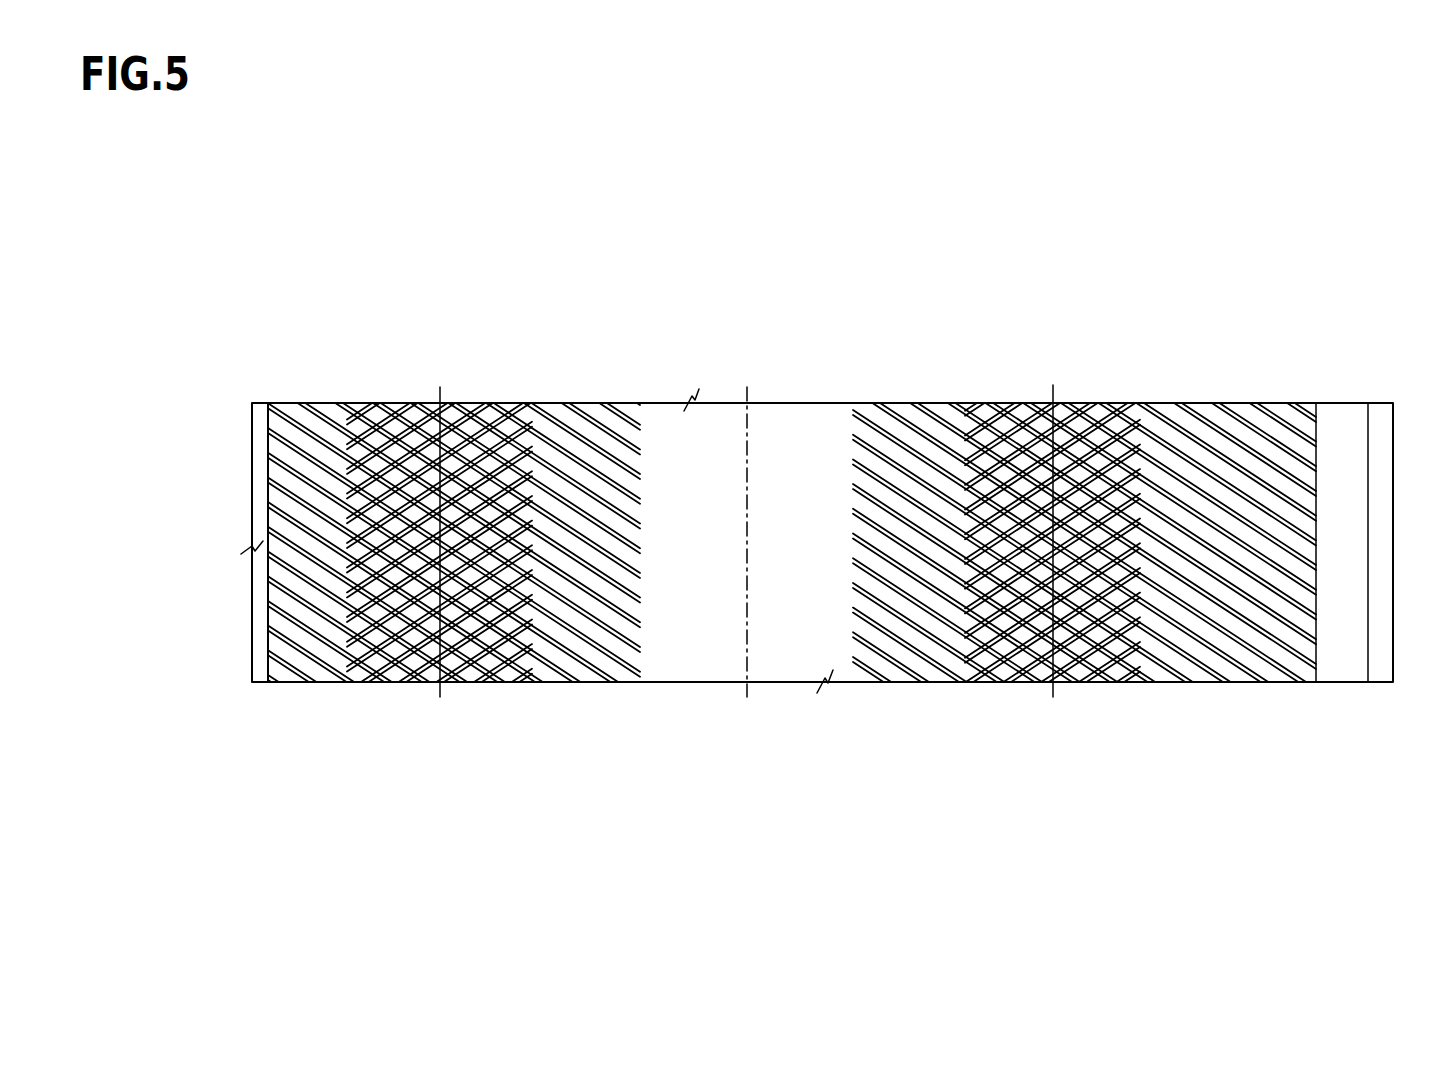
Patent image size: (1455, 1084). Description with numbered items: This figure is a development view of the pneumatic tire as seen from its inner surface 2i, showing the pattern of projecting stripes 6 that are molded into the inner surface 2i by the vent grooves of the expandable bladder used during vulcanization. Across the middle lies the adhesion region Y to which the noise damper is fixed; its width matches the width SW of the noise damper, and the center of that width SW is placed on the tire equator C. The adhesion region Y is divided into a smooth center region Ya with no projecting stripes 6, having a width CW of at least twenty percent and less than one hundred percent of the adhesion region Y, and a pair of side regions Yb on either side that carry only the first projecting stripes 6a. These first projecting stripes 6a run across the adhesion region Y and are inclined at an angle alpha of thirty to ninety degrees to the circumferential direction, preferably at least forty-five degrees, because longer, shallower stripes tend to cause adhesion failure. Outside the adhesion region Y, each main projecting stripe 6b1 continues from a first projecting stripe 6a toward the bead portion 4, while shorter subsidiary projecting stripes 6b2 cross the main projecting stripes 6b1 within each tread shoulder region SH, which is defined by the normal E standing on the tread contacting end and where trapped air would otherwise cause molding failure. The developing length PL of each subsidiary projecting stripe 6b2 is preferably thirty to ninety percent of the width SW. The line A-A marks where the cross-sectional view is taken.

The inner surface of the tire 2i is at (1225, 455).
The bead portion 4 is at (1380, 408).
The projecting stripe 6 is at (1260, 527).
The first projecting stripe 6a is at (619, 430).
The main projecting stripe 6b1 is at (303, 650).
The subsidiary projecting stripe 6b2 is at (405, 668).
The tread shoulder region SH is at (370, 400).
The normal E is at (440, 387).
The developing length of the subsidiary projecting stripe PL is at (347, 420).
The width of the noise damper SW is at (907, 697).
The adhesion region Y is at (745, 243).
The width of the center region CW is at (853, 403).
The tire equator C is at (745, 527).
The line A- A is at (870, 503).
The center region Ya is at (726, 575).
The side regions Yb is at (618, 588).
The angle of the first projecting stripes alpha is at (855, 604).